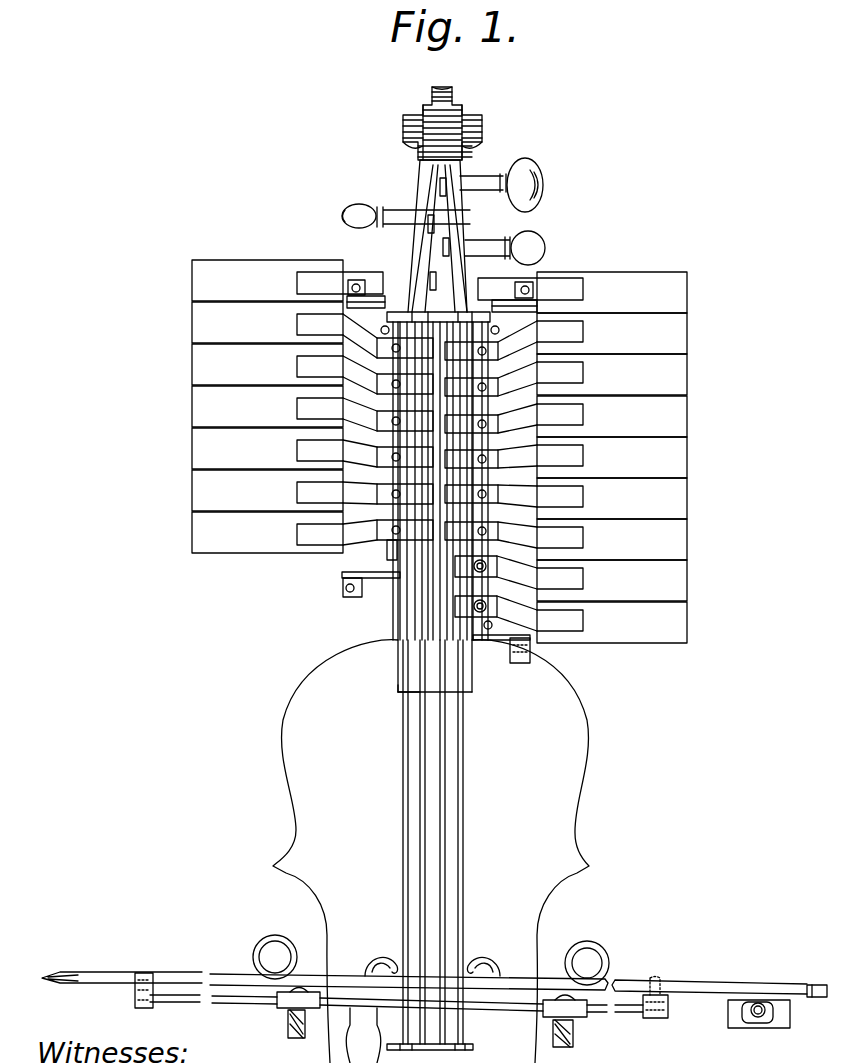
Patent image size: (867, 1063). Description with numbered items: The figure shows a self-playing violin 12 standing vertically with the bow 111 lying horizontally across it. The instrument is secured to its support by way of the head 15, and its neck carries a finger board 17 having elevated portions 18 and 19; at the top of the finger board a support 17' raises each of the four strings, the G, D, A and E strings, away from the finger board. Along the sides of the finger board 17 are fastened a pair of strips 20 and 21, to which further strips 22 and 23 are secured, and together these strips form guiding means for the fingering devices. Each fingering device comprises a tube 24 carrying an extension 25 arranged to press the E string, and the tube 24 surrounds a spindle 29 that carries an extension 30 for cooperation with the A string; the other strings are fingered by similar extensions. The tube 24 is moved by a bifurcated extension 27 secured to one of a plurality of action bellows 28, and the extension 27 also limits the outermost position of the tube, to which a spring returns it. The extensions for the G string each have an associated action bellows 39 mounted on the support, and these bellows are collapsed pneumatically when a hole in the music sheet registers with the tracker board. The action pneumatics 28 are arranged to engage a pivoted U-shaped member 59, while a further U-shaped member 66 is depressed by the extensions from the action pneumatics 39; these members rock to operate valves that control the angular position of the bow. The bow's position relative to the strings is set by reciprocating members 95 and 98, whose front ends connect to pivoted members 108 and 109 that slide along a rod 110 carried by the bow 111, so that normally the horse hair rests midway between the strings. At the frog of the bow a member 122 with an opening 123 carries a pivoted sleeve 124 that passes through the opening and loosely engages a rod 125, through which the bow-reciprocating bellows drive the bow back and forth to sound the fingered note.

The violin 12 is at (582, 743).
The head 15 is at (423, 200).
The finger board 17 is at (455, 507).
The support 17' is at (418, 316).
The elevated portion 18 is at (460, 688).
The elevated portion 19 is at (417, 688).
The strip 20 is at (492, 640).
The strip 21 is at (350, 582).
The strip 22 is at (530, 640).
The strip 23 is at (380, 552).
The tube 24 is at (488, 605).
The extension 25 is at (458, 605).
The extension 27 is at (530, 454).
The action bellows 28 is at (678, 460).
The spindle 29 is at (486, 424).
The extension 30 is at (492, 528).
The action bellows 39 is at (197, 453).
The U-shaped member 59 is at (502, 310).
The U-shaped member 66 is at (380, 298).
The member 95 is at (577, 1043).
The member 98 is at (308, 1022).
The pivoted member 108 is at (568, 1015).
The pivoted member 109 is at (292, 1008).
The rod 110 is at (182, 1005).
The bow 111 is at (688, 983).
The member 122 is at (783, 1013).
The opening 123 is at (748, 1022).
The sleeve 124 is at (763, 1005).
The rod 125 is at (757, 1005).
The G string G is at (406, 792).
The D string D is at (421, 830).
The A string A is at (447, 828).
The E string E is at (462, 788).